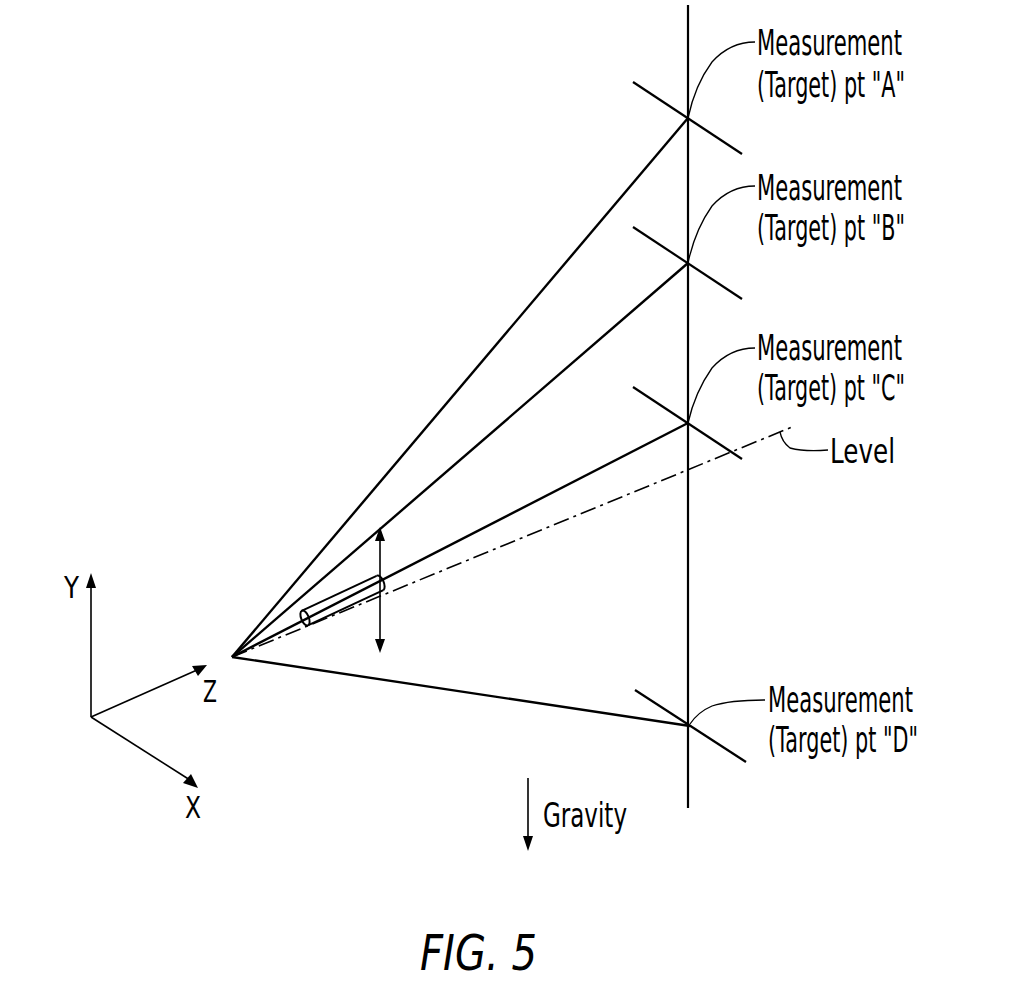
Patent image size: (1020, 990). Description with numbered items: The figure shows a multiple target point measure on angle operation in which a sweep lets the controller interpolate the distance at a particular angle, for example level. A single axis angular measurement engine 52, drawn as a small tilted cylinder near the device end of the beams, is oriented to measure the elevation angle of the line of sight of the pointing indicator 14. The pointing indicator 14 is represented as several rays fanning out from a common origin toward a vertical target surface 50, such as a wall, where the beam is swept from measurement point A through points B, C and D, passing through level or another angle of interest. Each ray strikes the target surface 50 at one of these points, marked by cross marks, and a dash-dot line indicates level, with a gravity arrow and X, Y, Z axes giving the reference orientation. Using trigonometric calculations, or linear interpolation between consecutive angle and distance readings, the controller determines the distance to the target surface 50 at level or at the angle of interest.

The pointing indicator 14 is at (563, 265).
The target surface 50 is at (688, 21).
The single axis angular measurement engine 52 is at (340, 592).